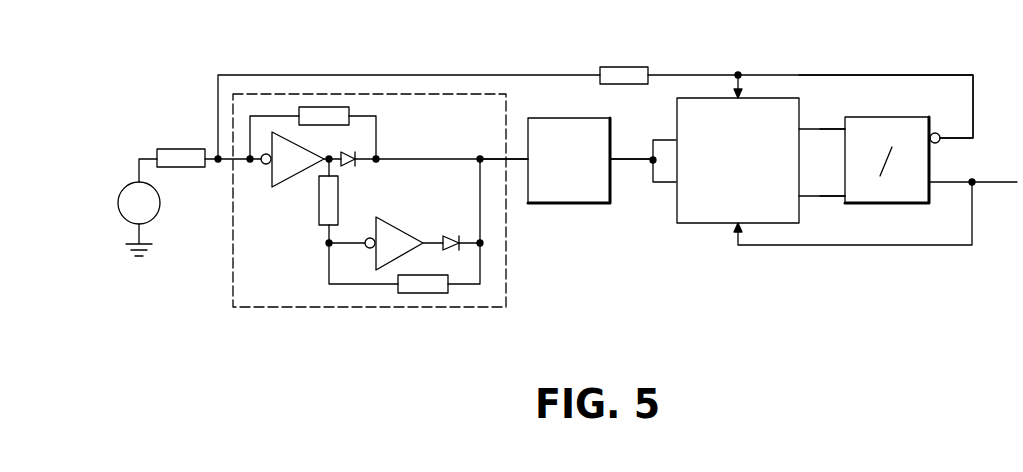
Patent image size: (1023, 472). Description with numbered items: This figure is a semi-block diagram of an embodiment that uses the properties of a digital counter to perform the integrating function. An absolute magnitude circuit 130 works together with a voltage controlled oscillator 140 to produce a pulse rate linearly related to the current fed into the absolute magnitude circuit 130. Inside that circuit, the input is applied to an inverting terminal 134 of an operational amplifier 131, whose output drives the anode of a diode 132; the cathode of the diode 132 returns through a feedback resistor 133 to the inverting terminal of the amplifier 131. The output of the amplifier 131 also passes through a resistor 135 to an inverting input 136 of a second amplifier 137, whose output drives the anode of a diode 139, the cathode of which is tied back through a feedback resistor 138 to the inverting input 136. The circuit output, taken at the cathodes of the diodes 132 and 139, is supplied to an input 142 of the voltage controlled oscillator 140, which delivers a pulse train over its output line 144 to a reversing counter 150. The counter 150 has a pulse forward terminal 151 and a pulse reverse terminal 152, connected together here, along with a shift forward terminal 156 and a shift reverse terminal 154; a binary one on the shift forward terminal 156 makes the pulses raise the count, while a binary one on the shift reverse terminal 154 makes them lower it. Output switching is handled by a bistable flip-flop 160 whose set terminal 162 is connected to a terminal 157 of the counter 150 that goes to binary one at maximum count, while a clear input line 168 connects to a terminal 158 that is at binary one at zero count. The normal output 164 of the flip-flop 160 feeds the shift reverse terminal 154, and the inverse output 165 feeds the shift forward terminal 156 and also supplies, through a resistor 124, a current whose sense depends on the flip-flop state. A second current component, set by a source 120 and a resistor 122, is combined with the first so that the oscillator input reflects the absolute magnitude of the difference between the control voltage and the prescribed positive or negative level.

The source 120 is at (118, 203).
The resistor 122 is at (182, 148).
The resistor 124 is at (634, 66).
The absolute magnitude circuit 130 is at (233, 290).
The operational amplifier 131 is at (301, 148).
The diode 132 is at (352, 164).
The feedback resistor 133 is at (358, 111).
The inverting terminal 134 is at (264, 167).
The resistor 135 is at (318, 200).
The inverting input 136 is at (365, 248).
The amplifier 137 is at (398, 229).
The feedback resistor 138 is at (397, 290).
The diode 139 is at (446, 248).
The voltage controlled oscillator 140 is at (566, 119).
The input 142 is at (520, 165).
The VCO output line 144 is at (613, 163).
The reversing counter 150 is at (682, 223).
The pulse forward terminal 151 is at (678, 140).
The pulse reverse terminal 152 is at (676, 194).
The shift reverse terminal 154 is at (734, 240).
The shift forward terminal 156 is at (745, 90).
The terminal 157 is at (802, 124).
The terminal 158 is at (804, 200).
The bistable flip-flop 160 is at (903, 117).
The set terminal 162 is at (846, 137).
The normal output 164 is at (964, 177).
The inverse output 165 is at (890, 76).
The reset input line of flip-flop 168 is at (842, 193).